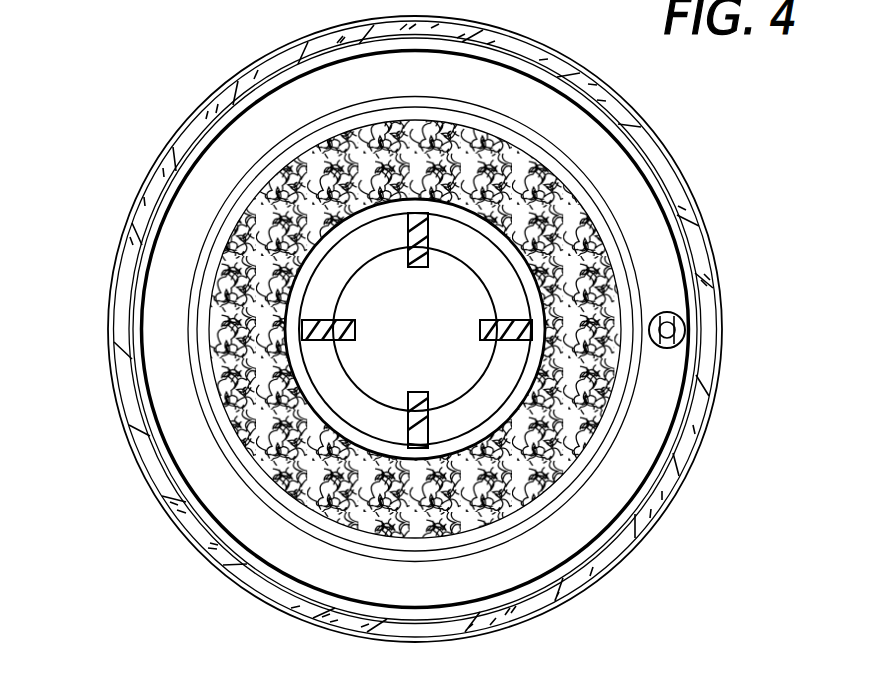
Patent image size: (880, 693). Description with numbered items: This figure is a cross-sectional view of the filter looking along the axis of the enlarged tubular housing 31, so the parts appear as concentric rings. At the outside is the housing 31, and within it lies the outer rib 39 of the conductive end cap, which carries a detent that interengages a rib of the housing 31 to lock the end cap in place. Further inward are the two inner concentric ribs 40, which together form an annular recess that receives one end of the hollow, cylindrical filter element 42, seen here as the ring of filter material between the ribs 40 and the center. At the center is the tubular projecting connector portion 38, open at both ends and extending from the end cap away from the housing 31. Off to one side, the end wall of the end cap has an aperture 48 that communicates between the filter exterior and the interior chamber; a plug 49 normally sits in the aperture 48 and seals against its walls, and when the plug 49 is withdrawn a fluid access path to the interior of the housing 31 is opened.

The enlarged tubular housing 31 is at (650, 130).
The projecting connector portion 38 is at (490, 346).
The outer rib 39 is at (141, 333).
The inner concentric ribs 40 is at (203, 368).
The filter element 42 is at (556, 236).
The aperture 48 is at (668, 332).
The plug 49 is at (683, 320).